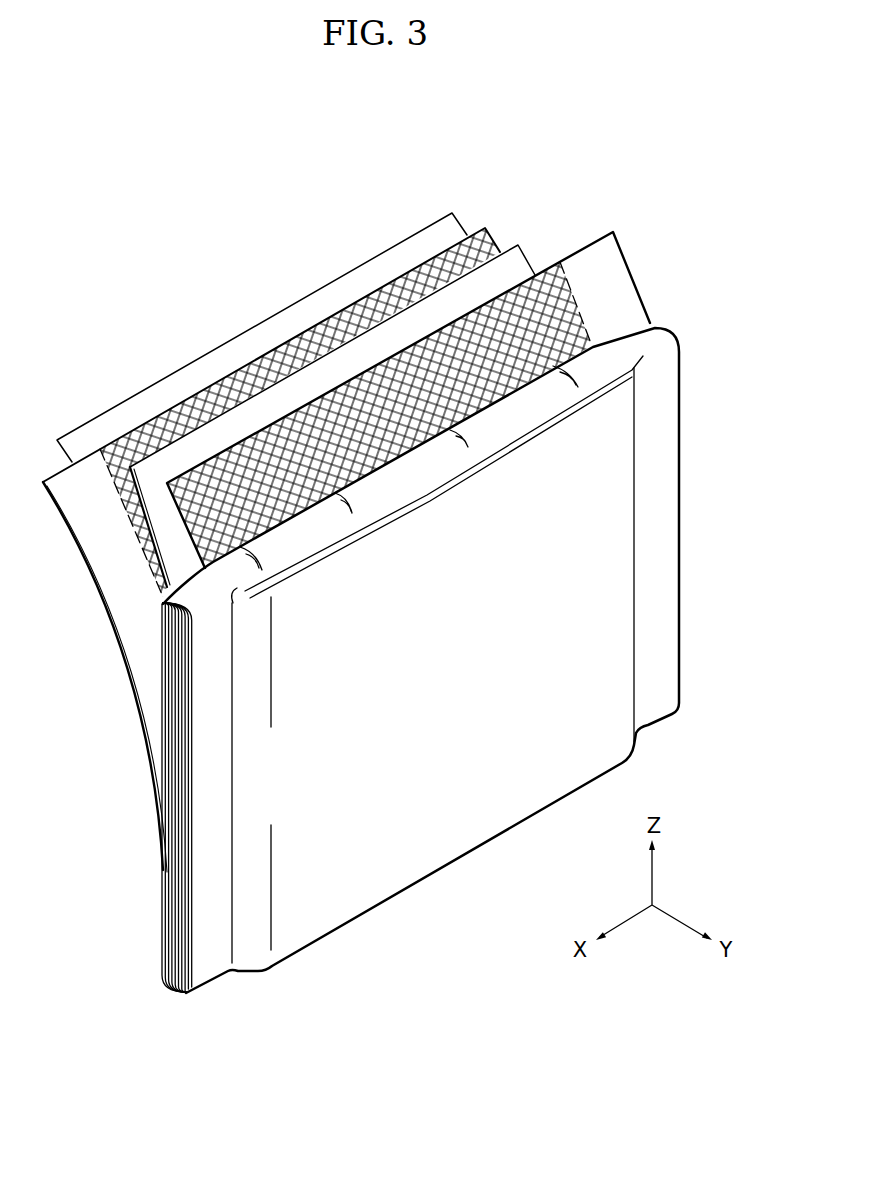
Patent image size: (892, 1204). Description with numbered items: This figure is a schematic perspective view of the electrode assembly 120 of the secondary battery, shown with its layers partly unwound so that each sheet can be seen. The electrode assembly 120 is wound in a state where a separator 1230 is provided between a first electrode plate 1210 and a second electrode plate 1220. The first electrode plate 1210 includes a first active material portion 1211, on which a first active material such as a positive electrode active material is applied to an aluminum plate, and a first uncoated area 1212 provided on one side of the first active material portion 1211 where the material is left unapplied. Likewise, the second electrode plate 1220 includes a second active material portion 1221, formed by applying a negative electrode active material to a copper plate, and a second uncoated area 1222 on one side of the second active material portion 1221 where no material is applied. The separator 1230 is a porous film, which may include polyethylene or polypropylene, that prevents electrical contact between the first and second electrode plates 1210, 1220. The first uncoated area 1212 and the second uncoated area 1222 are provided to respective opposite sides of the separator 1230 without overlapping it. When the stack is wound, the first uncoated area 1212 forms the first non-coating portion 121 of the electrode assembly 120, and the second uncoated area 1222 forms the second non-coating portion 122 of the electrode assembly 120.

The electrode assembly 120 is at (664, 210).
The first non-coating portion 121 is at (208, 828).
The second non-coating portion 122 is at (658, 545).
The first electrode plate 1210 is at (127, 329).
The first active material portion 1211 is at (142, 423).
The first uncoated area 1212 is at (83, 487).
The second electrode plate 1220 is at (495, 178).
The second active material portion 1221 is at (512, 323).
The second uncoated area 1222 is at (602, 253).
The separator 1230 is at (417, 323).